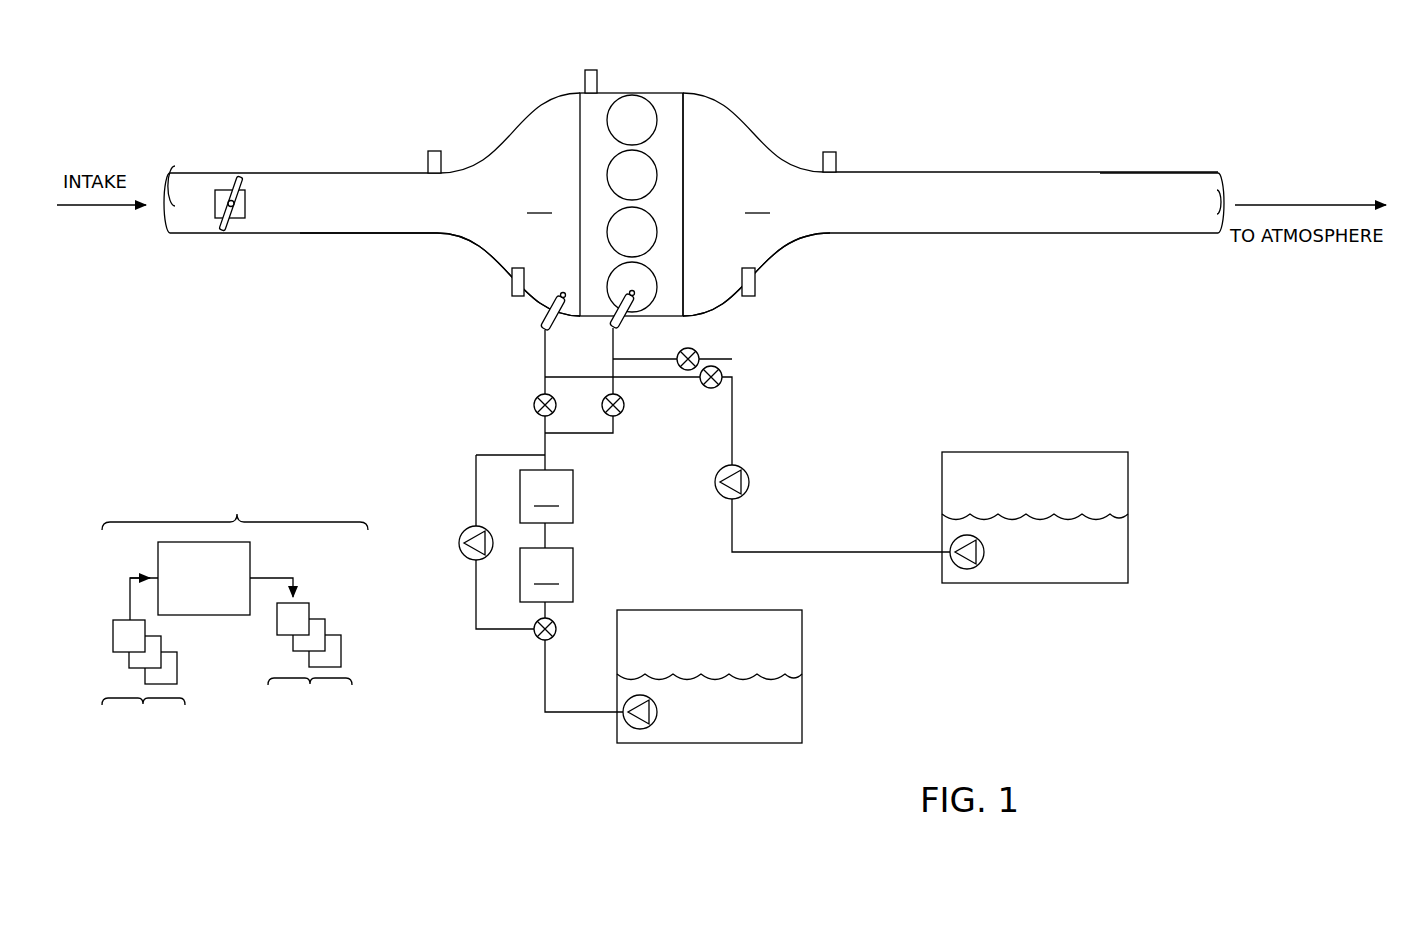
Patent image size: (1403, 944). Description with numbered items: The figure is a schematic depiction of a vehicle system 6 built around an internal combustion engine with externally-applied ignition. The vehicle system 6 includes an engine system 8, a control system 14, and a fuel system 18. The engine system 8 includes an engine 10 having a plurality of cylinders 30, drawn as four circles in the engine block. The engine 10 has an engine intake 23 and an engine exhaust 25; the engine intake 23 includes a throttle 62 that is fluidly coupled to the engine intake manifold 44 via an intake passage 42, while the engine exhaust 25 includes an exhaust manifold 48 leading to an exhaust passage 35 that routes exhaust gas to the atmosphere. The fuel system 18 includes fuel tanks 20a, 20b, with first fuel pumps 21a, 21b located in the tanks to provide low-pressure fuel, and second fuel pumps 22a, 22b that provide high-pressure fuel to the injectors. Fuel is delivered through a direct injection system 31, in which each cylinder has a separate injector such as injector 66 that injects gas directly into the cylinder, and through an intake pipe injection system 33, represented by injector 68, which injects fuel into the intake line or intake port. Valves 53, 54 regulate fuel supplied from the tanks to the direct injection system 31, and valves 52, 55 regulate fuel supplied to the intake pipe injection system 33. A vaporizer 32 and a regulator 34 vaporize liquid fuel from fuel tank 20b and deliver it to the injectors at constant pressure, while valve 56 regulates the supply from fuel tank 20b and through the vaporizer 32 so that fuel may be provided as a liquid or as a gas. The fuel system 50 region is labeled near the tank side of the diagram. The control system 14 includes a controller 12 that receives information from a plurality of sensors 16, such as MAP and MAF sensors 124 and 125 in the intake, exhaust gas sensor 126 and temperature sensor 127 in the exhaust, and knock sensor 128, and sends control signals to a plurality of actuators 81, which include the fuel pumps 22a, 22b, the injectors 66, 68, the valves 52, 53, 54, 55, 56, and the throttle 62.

The vehicle system 6 is at (250, 90).
The engine system 8 is at (815, 52).
The engine 10 is at (684, 185).
The controller 12 is at (204, 578).
The control system 14 is at (235, 607).
The sensors 16 is at (143, 663).
The fuel system 18 is at (946, 644).
The fuel tank 20a is at (1128, 564).
The fuel tank 20b is at (802, 722).
The first fuel pump 21a is at (977, 541).
The first fuel pump 21b is at (651, 701).
The second fuel pump 22a is at (745, 472).
The second fuel pump 22b is at (464, 530).
The engine intake 23 is at (378, 152).
The engine exhaust 25 is at (1047, 106).
The cylinders 30 is at (653, 110).
The direct injection system 31 is at (782, 347).
The vaporizer 32 is at (546, 575).
The intake pipe injection system 33 is at (448, 305).
The regulator 34 is at (546, 496).
The exhaust passage 35 is at (1180, 173).
The intake passage 42 is at (287, 235).
The engine intake manifold 44 is at (539, 203).
The exhaust manifold 48 is at (757, 203).
The fuel system 50 is at (1072, 353).
The valve 52 is at (536, 400).
The valve 53 is at (694, 349).
The valve 54 is at (624, 404).
The valve 55 is at (727, 367).
The valve 56 is at (554, 623).
The throttle 62 is at (254, 206).
The injector 66 is at (626, 318).
The injector 68 is at (557, 320).
The actuators 81 is at (302, 654).
The MAP sensor 124 is at (452, 148).
The MAF sensor 125 is at (512, 280).
The exhaust gas sensor 126 is at (755, 282).
The temperature sensor 127 is at (823, 162).
The knock sensor 128 is at (597, 80).